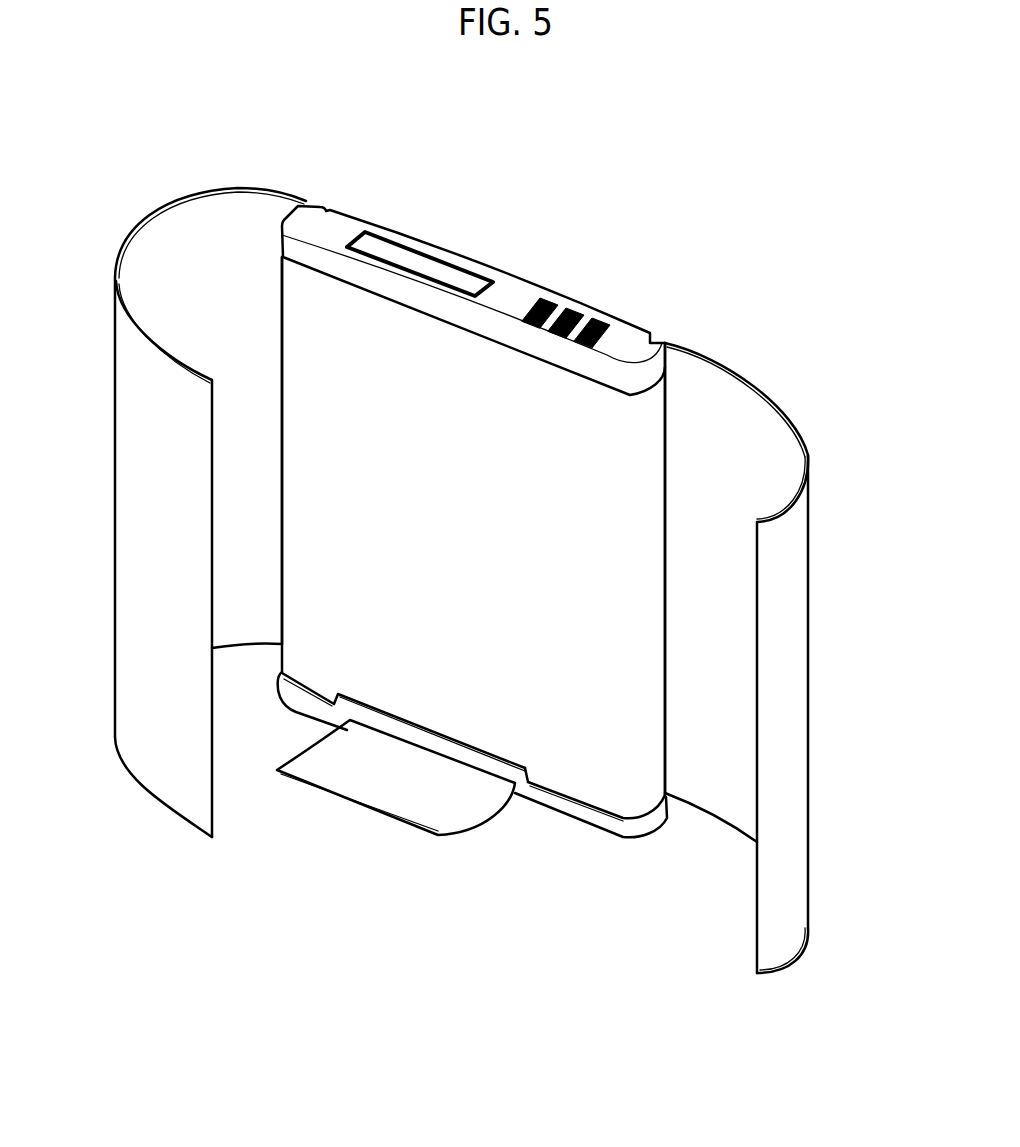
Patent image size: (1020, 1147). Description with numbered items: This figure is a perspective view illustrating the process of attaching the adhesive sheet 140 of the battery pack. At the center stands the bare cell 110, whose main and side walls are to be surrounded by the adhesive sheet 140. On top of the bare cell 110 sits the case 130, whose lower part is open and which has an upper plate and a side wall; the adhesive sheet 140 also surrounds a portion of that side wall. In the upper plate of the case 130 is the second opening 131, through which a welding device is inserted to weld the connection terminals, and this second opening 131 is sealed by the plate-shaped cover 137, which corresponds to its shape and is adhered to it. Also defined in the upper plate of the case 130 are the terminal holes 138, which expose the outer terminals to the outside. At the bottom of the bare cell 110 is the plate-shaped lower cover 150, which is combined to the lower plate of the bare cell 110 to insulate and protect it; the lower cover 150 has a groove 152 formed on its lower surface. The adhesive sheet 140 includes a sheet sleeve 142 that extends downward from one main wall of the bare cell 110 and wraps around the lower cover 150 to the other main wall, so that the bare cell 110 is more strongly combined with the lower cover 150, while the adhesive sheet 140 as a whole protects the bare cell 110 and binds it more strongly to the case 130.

The bare cell 110 is at (608, 628).
The case 130 is at (487, 264).
The second opening 131 is at (363, 242).
The cover 137 is at (437, 270).
The terminal holes 138 is at (600, 322).
The adhesive sheet 140 is at (181, 238).
The sheet sleeve 142 is at (382, 793).
The lower cover 150 is at (472, 791).
The groove 152 is at (507, 798).